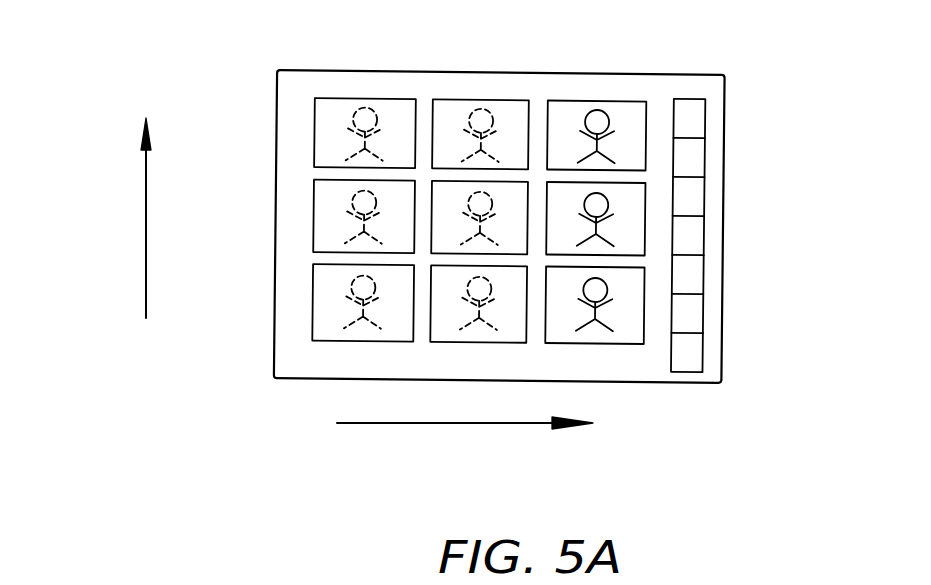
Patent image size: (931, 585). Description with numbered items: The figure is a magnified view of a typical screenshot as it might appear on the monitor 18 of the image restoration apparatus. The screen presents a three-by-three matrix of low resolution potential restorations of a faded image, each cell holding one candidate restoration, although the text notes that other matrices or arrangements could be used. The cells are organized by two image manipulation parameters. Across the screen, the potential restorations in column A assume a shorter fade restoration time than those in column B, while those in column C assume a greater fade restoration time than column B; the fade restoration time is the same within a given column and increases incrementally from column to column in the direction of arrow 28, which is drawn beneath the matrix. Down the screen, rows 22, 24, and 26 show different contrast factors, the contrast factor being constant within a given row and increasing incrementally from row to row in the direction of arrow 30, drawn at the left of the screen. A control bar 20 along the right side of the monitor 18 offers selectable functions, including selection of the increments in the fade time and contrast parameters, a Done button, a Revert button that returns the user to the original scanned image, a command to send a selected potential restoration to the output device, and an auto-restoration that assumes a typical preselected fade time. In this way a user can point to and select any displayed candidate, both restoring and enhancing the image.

The monitor 18 is at (726, 101).
The control bar 20 is at (695, 243).
The row 22 is at (313, 313).
The row 24 is at (314, 218).
The row 26 is at (314, 134).
The arrow 28 is at (476, 424).
The arrow 30 is at (146, 222).
The column A is at (390, 88).
The column B is at (492, 88).
The column C is at (602, 90).